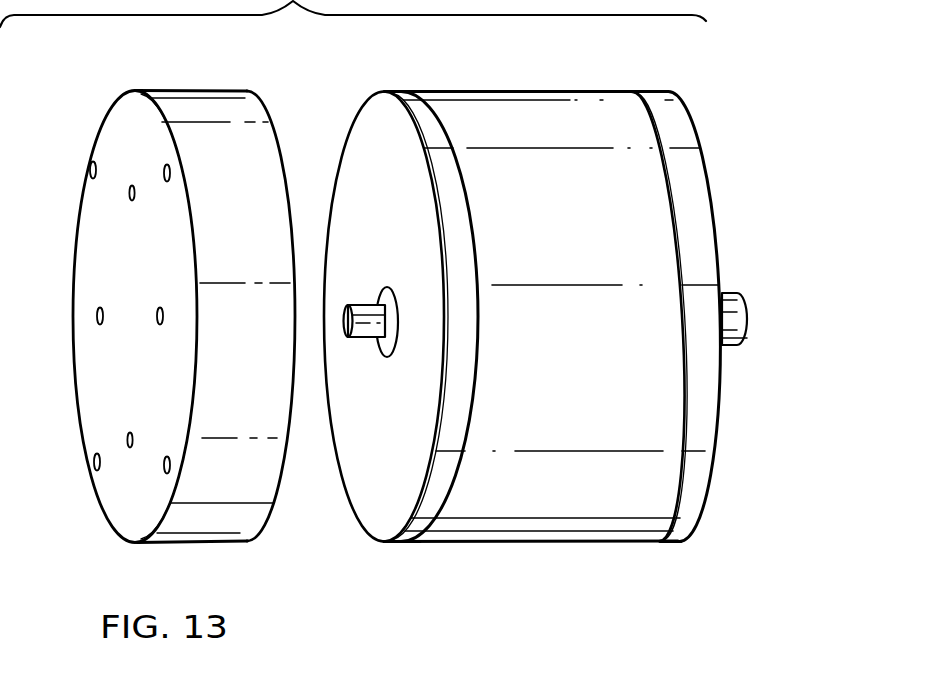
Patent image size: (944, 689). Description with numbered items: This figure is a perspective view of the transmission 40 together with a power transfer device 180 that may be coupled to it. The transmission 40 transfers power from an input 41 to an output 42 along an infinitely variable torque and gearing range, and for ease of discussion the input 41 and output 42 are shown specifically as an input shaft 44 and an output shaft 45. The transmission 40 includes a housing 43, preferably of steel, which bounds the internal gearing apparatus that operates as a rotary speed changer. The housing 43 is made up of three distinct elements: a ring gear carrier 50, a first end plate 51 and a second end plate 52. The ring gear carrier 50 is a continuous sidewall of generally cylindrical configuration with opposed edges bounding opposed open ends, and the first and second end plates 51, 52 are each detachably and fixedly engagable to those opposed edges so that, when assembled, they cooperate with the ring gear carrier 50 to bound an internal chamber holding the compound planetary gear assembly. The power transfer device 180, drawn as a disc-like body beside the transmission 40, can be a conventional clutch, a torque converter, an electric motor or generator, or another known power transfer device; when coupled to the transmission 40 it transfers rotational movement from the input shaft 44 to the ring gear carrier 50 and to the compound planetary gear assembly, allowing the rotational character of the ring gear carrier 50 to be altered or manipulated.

The transmission 40 is at (546, 313).
The input 41 is at (362, 340).
The output 42 is at (730, 347).
The housing 43 is at (505, 544).
The input shaft 44 is at (368, 304).
The output shaft 45 is at (736, 292).
The ring gear carrier 50 is at (560, 542).
The first end plate 51 is at (388, 520).
The second end plate 52 is at (680, 541).
The power transfer device 180 is at (263, 110).